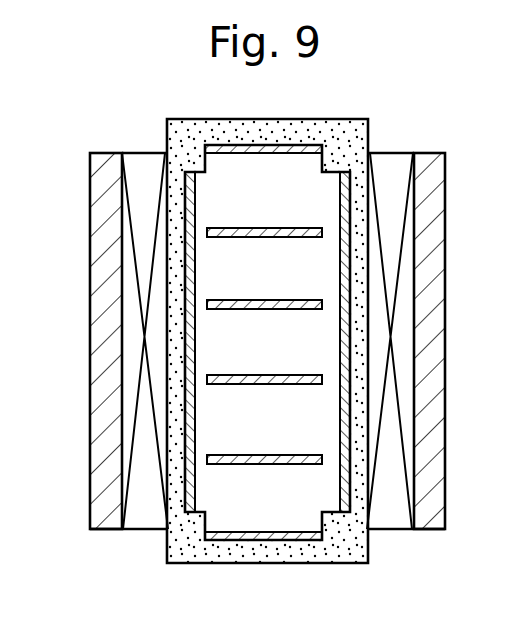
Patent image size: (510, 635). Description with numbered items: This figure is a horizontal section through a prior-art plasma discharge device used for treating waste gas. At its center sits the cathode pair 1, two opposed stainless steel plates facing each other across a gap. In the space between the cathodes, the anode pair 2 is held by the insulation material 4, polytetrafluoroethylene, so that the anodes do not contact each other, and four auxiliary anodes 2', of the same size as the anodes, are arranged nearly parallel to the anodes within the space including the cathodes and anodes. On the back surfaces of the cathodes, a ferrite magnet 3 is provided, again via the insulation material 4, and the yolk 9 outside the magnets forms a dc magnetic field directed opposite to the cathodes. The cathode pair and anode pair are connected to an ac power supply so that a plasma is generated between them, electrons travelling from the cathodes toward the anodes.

The cathode pair 1 is at (193, 483).
The anode pair 2 is at (263, 378).
The auxiliary anode 2' is at (264, 324).
The ferrite magnet 3 is at (145, 520).
The insulation material 4 is at (350, 139).
The yolk 9 is at (100, 192).